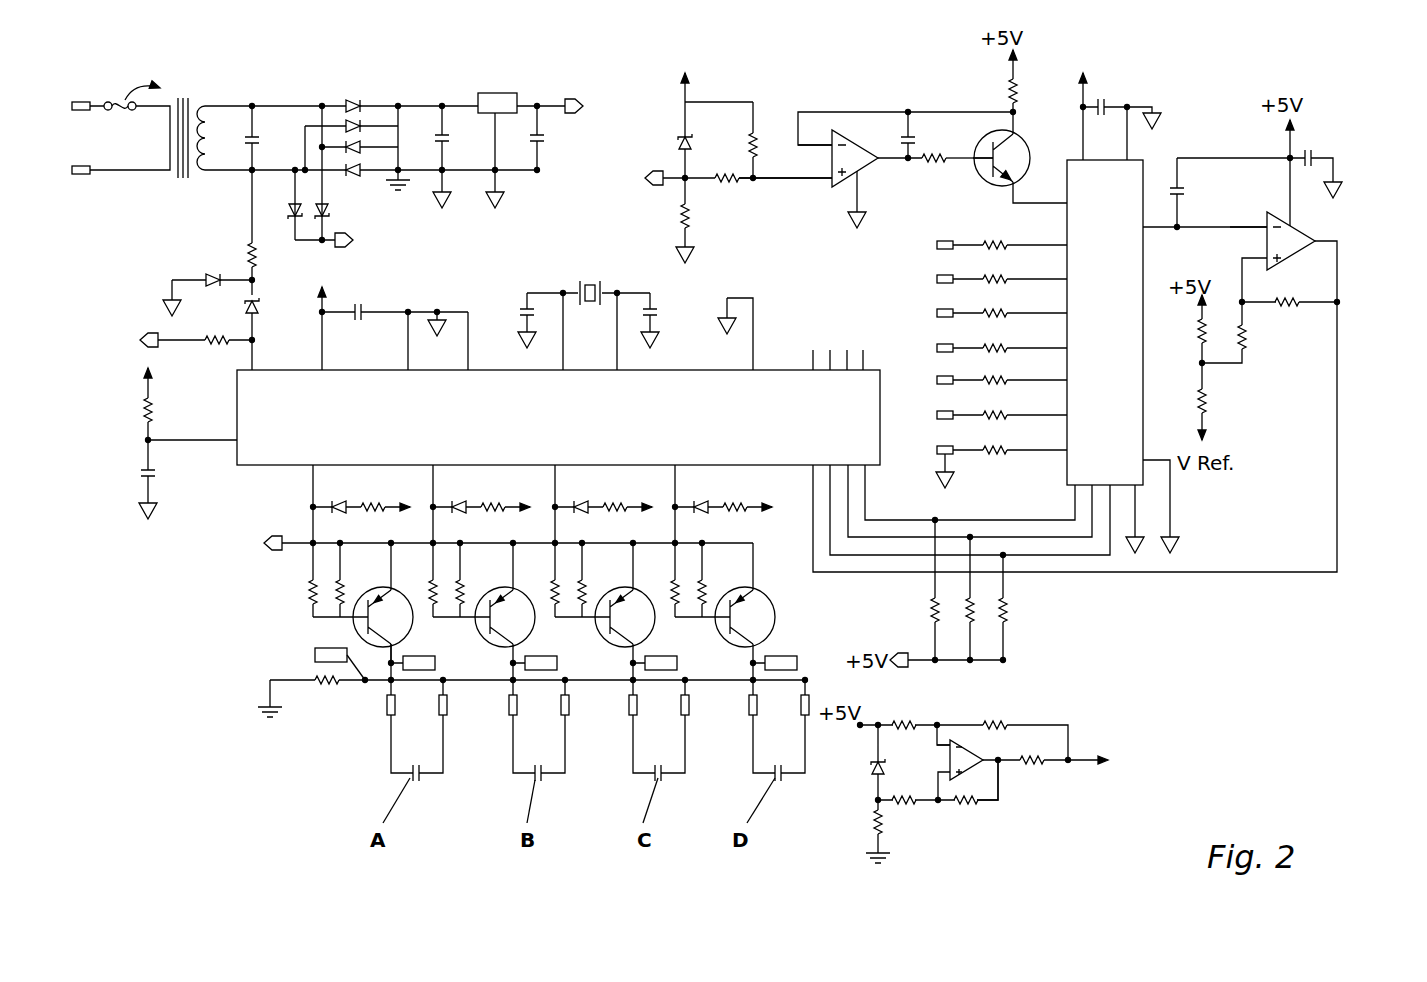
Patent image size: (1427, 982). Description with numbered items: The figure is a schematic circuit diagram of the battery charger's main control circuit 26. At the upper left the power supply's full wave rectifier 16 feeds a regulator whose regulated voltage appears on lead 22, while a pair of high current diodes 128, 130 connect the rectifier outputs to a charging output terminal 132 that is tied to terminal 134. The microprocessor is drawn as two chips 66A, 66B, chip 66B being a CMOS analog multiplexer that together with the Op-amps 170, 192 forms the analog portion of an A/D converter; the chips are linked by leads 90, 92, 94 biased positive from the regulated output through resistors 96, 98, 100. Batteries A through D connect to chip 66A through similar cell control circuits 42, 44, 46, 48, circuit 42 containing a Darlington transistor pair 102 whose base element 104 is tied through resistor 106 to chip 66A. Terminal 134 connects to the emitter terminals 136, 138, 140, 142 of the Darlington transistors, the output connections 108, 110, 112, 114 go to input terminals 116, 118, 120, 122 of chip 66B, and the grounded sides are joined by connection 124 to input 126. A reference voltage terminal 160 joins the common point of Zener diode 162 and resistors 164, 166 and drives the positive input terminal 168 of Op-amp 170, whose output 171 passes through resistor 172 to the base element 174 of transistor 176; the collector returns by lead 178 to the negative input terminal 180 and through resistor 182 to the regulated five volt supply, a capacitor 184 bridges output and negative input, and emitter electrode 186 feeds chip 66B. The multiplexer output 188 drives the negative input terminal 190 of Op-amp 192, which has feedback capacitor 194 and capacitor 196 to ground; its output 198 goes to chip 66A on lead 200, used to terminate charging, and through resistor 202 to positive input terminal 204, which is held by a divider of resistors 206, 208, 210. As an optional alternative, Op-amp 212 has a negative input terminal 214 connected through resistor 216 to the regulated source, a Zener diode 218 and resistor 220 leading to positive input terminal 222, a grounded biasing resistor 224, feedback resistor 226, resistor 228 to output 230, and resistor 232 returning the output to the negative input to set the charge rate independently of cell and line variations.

The rectifier 16 is at (362, 102).
The lead 22 is at (545, 102).
The circuit 26 is at (1178, 61).
The cell control circuit 42 is at (338, 630).
The control circuit 44 is at (472, 638).
The control circuit 46 is at (590, 640).
The control circuit 48 is at (712, 638).
The integrated circuit chip 66A is at (780, 396).
The integrated circuit chip 66B is at (1138, 322).
The lead 90 is at (866, 484).
The lead 92 is at (850, 515).
The lead 94 is at (814, 478).
The resistor 96 is at (932, 612).
The resistor 98 is at (968, 610).
The resistor 100 is at (1006, 612).
The Darlington transistor pair 102 is at (372, 582).
The base element 104 is at (372, 645).
The resistor 106 is at (310, 588).
The output connection 108 is at (438, 664).
The output connection 110 is at (558, 664).
The output connection 112 is at (678, 664).
The output connection 114 is at (800, 657).
The input terminal 116 is at (936, 245).
The input terminal 118 is at (936, 279).
The input terminal 120 is at (936, 313).
The input terminal 122 is at (936, 348).
The connection 124 is at (315, 656).
The input 126 is at (936, 415).
The diode 128 is at (288, 210).
The diode 130 is at (330, 205).
The charging output terminal 132 is at (352, 244).
The terminal 134 is at (199, 443).
The emitter terminal 136 is at (384, 596).
The emitter terminal 138 is at (510, 585).
The emitter terminal 140 is at (632, 588).
The emitter terminal 142 is at (752, 597).
The terminal 160 is at (645, 180).
The Zener diode 162 is at (672, 145).
The resistor 164 is at (692, 218).
The resistor 166 is at (720, 177).
The positive input terminal 168 is at (832, 182).
The operational amplifier circuit 170 is at (872, 172).
The output 171 is at (908, 163).
The resistor 172 is at (935, 166).
The base element 174 is at (1015, 162).
The transistor 176 is at (989, 128).
The lead 178 is at (842, 112).
The negative input terminal 180 is at (830, 147).
The resistor 182 is at (1018, 92).
The capacitor 184 is at (905, 140).
The emitter electrode 186 is at (1013, 195).
The output 188 is at (1155, 227).
The negative input terminal 190 is at (1262, 225).
The Op-amp 192 is at (1306, 225).
The capacitor 194 is at (1172, 185).
The capacitor 196 is at (1315, 152).
The output 198 is at (1340, 253).
The lead 200 is at (1338, 432).
The resistor 202 is at (1338, 304).
The positive input terminal 204 is at (1260, 260).
The resistor 206 is at (1246, 335).
The resistor 208 is at (1200, 335).
The resistor 210 is at (1200, 402).
The Op-amp 212 is at (966, 736).
The negative input terminal 214 is at (947, 750).
The resistor 216 is at (905, 722).
The Zener diode 218 is at (876, 768).
The resistor 220 is at (910, 806).
The positive input terminal 222 is at (946, 782).
The biasing resistor 224 is at (875, 822).
The feedback resistor 226 is at (975, 806).
The resistor 228 is at (1033, 766).
The output 230 is at (1110, 758).
The resistor 232 is at (997, 722).